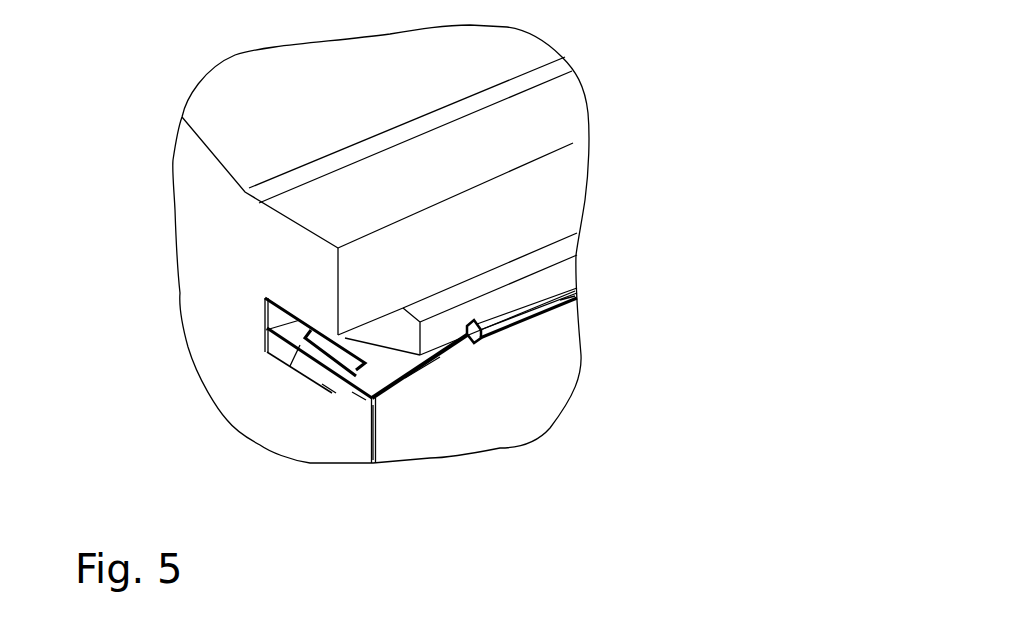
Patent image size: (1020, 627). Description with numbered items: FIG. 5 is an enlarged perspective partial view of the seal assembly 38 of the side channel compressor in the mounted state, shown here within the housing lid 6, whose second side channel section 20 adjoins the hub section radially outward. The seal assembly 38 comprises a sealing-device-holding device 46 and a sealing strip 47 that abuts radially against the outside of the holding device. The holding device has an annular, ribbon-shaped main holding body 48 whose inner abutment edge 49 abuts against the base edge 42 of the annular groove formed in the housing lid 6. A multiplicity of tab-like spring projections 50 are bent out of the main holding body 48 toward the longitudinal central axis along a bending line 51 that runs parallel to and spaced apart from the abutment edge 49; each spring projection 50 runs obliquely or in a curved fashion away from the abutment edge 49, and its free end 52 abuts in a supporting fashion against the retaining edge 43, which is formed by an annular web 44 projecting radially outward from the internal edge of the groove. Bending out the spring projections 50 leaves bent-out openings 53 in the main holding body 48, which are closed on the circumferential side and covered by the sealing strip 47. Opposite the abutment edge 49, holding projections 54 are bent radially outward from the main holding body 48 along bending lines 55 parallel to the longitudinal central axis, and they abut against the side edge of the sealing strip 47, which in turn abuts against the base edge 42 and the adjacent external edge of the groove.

The housing lid 6 is at (178, 221).
The second side channel section 20 is at (190, 197).
The sealing-device-holding device 46 is at (361, 347).
The base edge 42 is at (270, 311).
The abutment edge 49 is at (264, 333).
The bending line 51 is at (264, 352).
The spring projection 50 is at (304, 343).
The retaining edge 43 is at (330, 388).
The free end 52 is at (358, 398).
The annular web 44 is at (374, 425).
The seal assembly 38 is at (421, 381).
The sealing strip 47 is at (553, 280).
The holding projection 54 is at (572, 303).
The bending line 55 is at (478, 332).
The main holding body 48 is at (428, 360).
The bent-out opening 53 is at (428, 372).